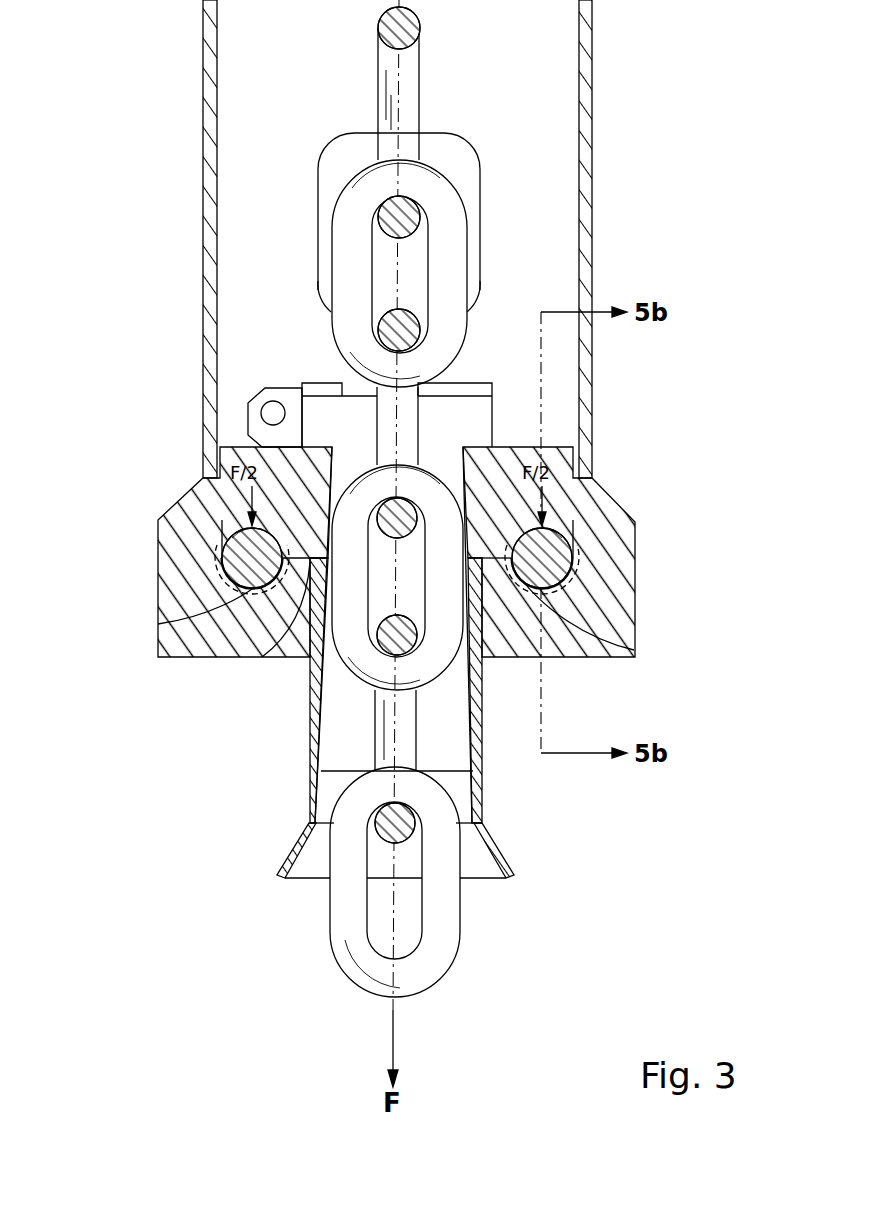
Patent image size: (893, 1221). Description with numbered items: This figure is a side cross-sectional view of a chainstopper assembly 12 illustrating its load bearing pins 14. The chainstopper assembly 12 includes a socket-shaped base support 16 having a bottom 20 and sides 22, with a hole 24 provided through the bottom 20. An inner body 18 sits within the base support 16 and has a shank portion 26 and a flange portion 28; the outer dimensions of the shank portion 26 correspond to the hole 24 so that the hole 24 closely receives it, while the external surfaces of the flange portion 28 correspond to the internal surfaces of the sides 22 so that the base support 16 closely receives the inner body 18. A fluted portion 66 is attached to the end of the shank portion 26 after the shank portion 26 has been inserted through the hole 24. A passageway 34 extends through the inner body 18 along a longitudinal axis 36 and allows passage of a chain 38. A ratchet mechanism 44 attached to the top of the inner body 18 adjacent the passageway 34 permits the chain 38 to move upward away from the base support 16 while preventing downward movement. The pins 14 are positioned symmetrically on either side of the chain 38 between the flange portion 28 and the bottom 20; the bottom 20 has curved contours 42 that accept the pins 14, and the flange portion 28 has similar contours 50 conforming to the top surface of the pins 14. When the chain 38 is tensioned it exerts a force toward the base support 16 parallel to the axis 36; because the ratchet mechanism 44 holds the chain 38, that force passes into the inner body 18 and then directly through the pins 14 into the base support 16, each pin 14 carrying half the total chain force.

The chainstopper assembly 12 is at (152, 306).
The pins 14 is at (248, 566).
The base support 16 is at (648, 612).
The inner body 18 is at (564, 425).
The bottom 20 is at (243, 656).
The sides 22 is at (158, 544).
The hole 24 is at (312, 664).
The shank portion 26 is at (308, 706).
The flange portion 28 is at (230, 517).
The passageway 34 is at (448, 740).
The longitudinal axis 36 is at (393, 920).
The chain 38 is at (460, 910).
The curved contours 42 is at (227, 587).
The ratchet mechanism 44 is at (458, 408).
The contours 50 is at (240, 522).
The fluted portion 66 is at (300, 838).